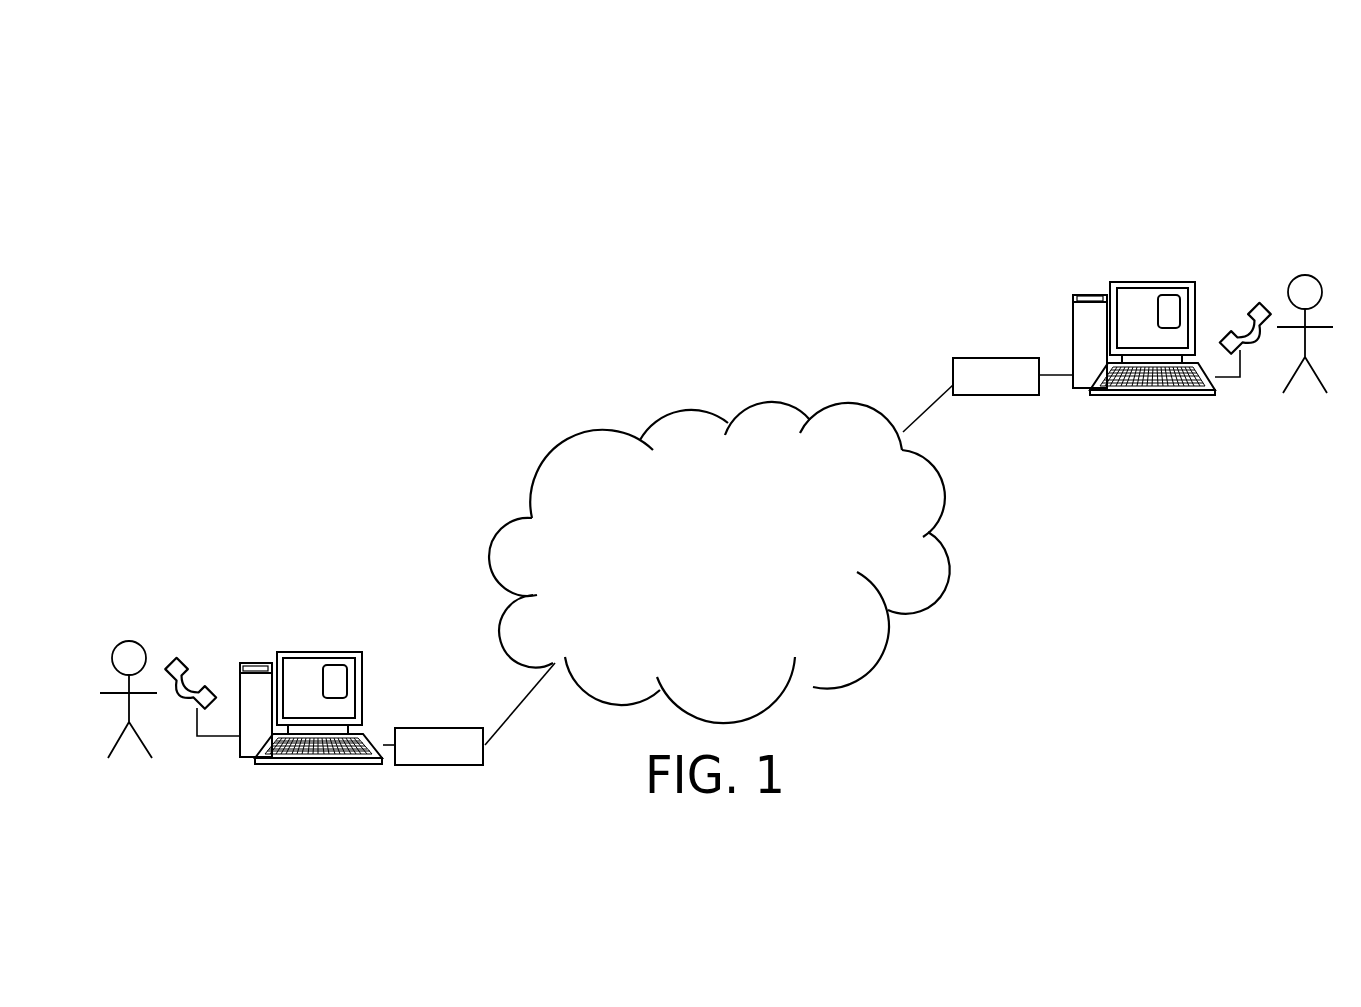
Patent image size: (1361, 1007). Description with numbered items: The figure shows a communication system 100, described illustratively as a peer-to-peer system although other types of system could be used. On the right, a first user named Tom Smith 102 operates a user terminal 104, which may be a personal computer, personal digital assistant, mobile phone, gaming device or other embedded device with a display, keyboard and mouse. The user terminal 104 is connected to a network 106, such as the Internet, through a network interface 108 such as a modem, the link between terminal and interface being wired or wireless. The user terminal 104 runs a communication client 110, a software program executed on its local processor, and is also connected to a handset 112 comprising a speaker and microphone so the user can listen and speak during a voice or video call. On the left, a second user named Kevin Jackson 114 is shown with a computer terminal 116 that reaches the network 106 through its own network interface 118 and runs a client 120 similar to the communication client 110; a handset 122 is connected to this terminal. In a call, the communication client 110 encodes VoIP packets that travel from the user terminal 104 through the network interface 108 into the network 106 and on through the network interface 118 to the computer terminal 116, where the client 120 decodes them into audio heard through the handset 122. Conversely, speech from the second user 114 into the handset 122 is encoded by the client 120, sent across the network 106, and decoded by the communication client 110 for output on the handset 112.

The communication system 100 is at (488, 382).
The first user 102 is at (1305, 275).
The user terminal 104 is at (1122, 282).
The network 106 is at (954, 562).
The network interface 108 is at (997, 357).
The communication client 110 is at (1170, 295).
The handset 112 is at (1259, 307).
The second user 114 is at (129, 641).
The computer terminal 116 is at (287, 652).
The network interface 118 is at (439, 728).
The client 120 is at (335, 665).
The handset 122 is at (175, 662).